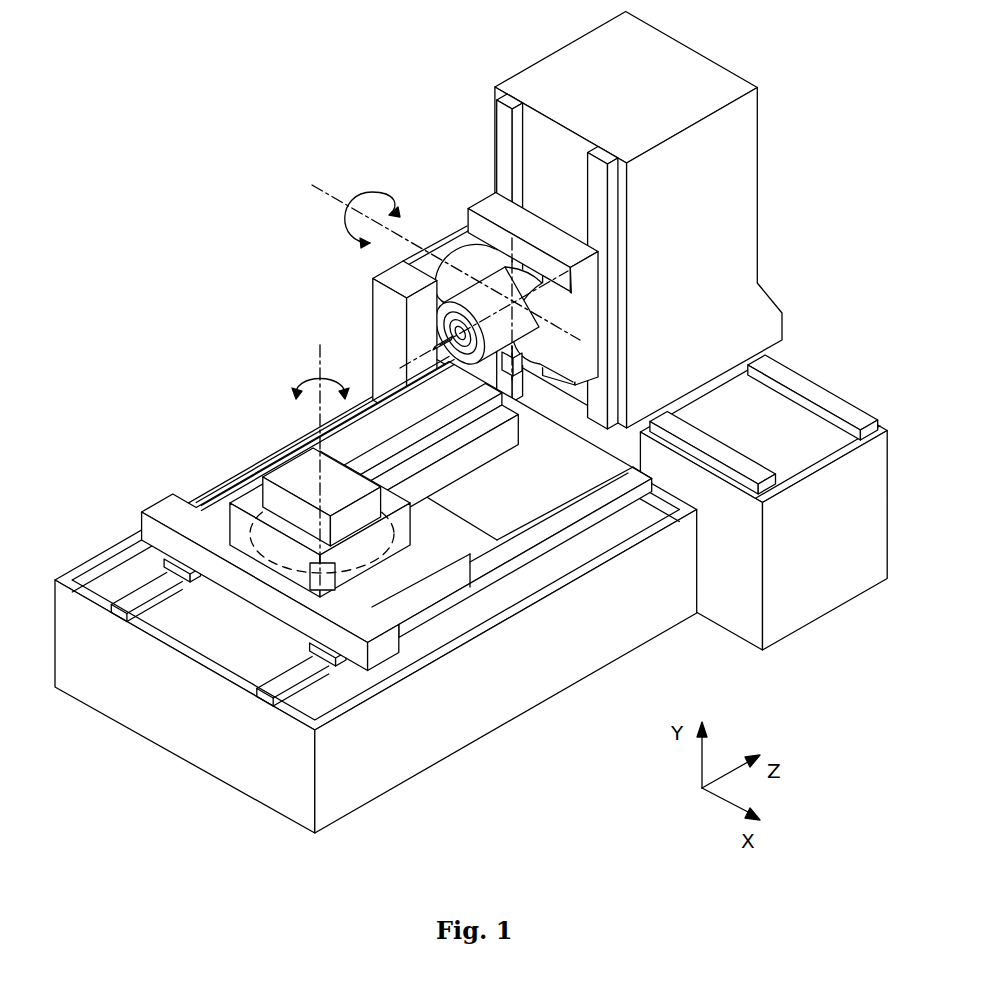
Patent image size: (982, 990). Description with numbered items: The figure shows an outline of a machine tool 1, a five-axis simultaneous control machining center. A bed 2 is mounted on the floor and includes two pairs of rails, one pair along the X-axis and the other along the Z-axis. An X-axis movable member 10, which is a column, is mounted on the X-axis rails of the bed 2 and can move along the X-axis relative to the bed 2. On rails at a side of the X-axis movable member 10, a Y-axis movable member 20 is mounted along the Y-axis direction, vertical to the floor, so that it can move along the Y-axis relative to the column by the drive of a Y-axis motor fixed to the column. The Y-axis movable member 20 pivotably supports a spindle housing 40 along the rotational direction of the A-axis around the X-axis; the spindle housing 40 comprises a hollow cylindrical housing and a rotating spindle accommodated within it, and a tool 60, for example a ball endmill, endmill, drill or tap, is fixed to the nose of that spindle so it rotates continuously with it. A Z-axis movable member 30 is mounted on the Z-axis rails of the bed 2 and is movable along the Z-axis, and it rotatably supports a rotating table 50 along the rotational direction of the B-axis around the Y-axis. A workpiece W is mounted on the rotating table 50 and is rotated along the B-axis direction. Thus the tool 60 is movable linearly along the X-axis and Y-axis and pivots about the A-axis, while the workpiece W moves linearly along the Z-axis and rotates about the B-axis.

The machine tool 1 is at (270, 135).
The bed 2 is at (512, 720).
The X-axis movable member 10 is at (759, 165).
The Y-axis movable member 20 is at (485, 197).
The Z-axis movable member 30 is at (152, 508).
The spindle housing 40 is at (475, 242).
The rotating table 50 is at (240, 497).
The tool 60 is at (437, 343).
The workpiece W is at (280, 455).